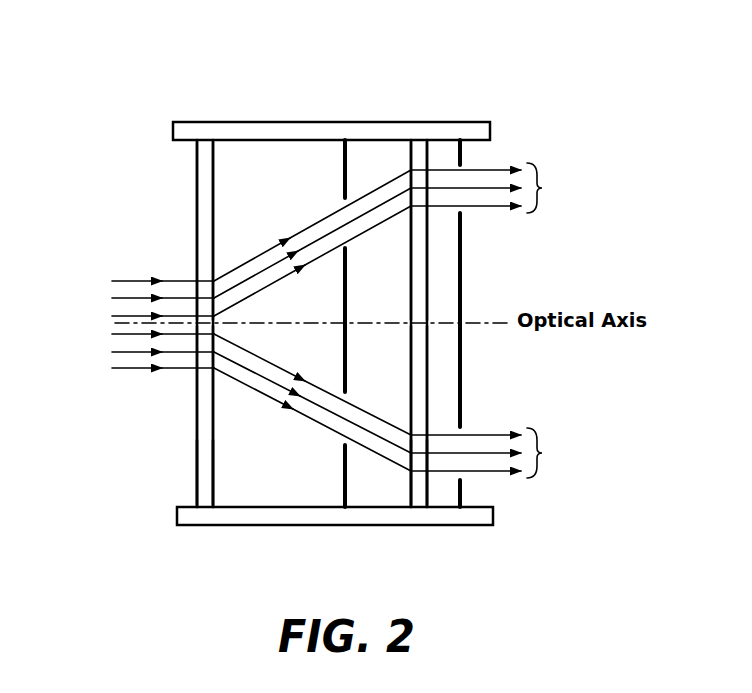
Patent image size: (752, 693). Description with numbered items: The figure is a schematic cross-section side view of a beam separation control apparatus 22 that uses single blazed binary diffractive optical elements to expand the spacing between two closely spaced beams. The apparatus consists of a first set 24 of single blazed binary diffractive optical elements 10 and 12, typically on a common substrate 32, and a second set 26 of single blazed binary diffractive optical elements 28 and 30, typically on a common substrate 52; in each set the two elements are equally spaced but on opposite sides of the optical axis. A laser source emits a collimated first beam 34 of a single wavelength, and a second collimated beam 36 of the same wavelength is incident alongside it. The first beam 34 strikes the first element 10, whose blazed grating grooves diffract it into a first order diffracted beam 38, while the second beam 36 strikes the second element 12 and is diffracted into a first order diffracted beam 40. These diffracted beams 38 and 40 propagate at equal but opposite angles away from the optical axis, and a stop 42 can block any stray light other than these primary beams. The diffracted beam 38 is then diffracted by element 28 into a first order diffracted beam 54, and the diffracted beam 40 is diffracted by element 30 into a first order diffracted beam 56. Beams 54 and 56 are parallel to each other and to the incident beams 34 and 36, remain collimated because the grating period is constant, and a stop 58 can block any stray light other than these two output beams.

The beam separation control apparatus 22 is at (336, 58).
The first set of single blazed binary diffractive optical elements 24 is at (213, 158).
The second set of single blazed binary diffractive optical elements 26 is at (441, 152).
The first single blazed binary diffractive optical element 10 is at (226, 218).
The second single blazed binary diffractive optical element 12 is at (228, 460).
The single blazed binary diffractive optical element 28 is at (409, 240).
The single blazed binary diffractive optical element 30 is at (409, 353).
The common substrate 32 is at (208, 490).
The first beam 34 is at (132, 281).
The second beam 36 is at (132, 368).
The first order diffracted beam 38 is at (325, 222).
The first order diffracted beam 40 is at (325, 430).
The stop 42 is at (343, 487).
The common substrate 52 is at (420, 488).
The first order diffracted beam 54 is at (492, 188).
The first order diffracted beam 56 is at (493, 453).
The stop 58 is at (463, 482).